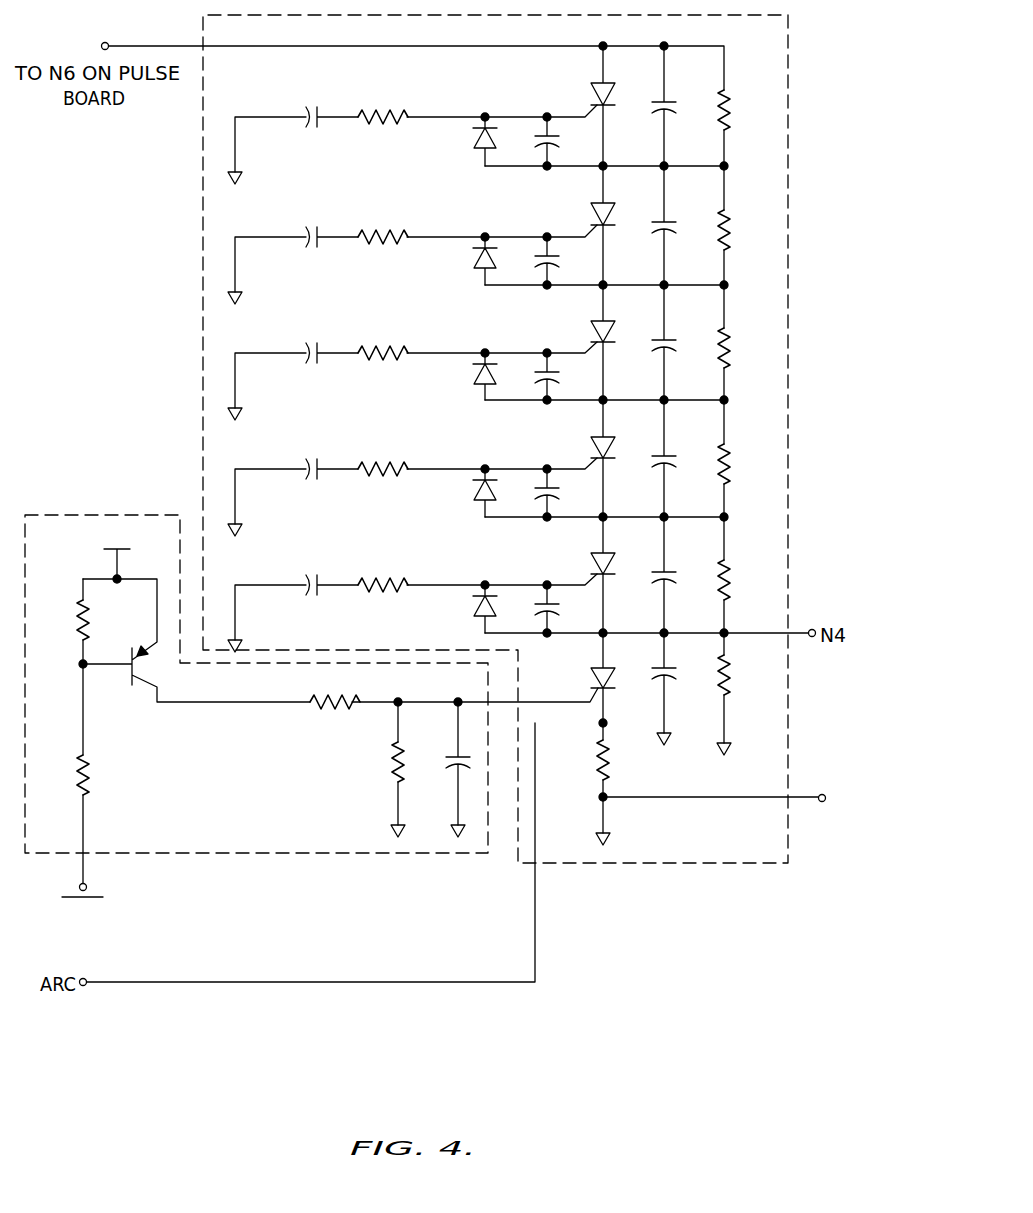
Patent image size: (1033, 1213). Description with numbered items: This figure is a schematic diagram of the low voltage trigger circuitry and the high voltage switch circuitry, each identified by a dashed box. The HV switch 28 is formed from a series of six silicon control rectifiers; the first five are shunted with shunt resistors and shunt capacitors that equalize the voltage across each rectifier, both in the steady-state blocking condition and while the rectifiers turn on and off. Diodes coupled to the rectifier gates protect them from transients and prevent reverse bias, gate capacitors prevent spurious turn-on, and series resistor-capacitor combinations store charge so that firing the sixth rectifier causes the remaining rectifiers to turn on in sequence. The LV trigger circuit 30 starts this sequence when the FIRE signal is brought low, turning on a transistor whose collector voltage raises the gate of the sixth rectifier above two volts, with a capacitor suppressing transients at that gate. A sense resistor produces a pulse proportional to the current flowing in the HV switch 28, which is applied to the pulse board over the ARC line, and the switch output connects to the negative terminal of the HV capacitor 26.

The high voltage capacitor 26 is at (757, 827).
The HV switch 28 is at (690, 864).
The LV trigger circuit 30 is at (268, 855).